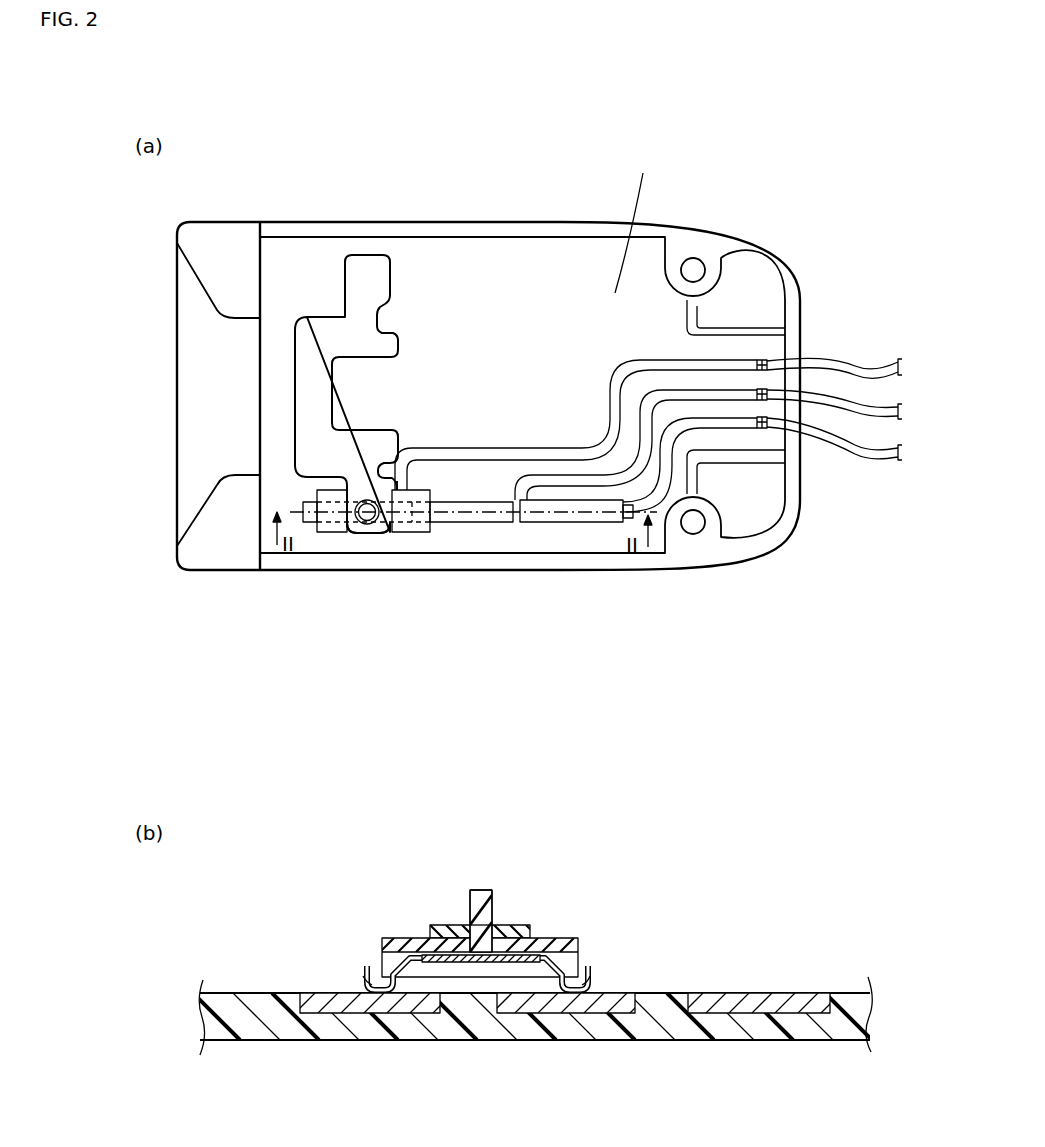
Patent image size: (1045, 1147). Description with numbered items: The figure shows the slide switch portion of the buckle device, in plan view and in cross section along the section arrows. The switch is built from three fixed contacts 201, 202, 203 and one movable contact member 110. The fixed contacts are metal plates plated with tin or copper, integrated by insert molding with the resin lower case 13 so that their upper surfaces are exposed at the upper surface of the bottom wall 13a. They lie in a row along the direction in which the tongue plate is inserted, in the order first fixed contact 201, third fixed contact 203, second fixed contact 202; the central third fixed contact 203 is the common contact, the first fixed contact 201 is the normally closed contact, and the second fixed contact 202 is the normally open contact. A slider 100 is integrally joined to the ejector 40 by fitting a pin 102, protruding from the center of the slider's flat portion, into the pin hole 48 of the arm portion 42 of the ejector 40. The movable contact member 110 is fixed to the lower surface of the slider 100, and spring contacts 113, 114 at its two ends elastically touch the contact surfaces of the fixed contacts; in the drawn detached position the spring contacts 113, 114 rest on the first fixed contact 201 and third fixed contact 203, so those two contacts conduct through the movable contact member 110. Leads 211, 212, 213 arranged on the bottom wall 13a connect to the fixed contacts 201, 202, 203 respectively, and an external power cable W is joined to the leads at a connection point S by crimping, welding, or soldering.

The lower case 13 is at (515, 221).
The bottom wall 13a is at (848, 1000).
The ejector 40 is at (295, 396).
The arm portion 42 is at (360, 477).
The pin hole 48 is at (370, 520).
The pin 102 is at (478, 893).
The slider 100 is at (334, 533).
The movable contact member 110 is at (454, 964).
The spring contact 113 is at (362, 976).
The spring contact 114 is at (598, 972).
The first fixed contact 201 is at (312, 523).
The second fixed contact 202 is at (557, 522).
The third fixed contact 203 is at (477, 522).
The lead 211 is at (537, 452).
The lead 212 is at (693, 420).
The lead 213 is at (633, 440).
The connection point S is at (768, 421).
The external power cable W is at (868, 446).